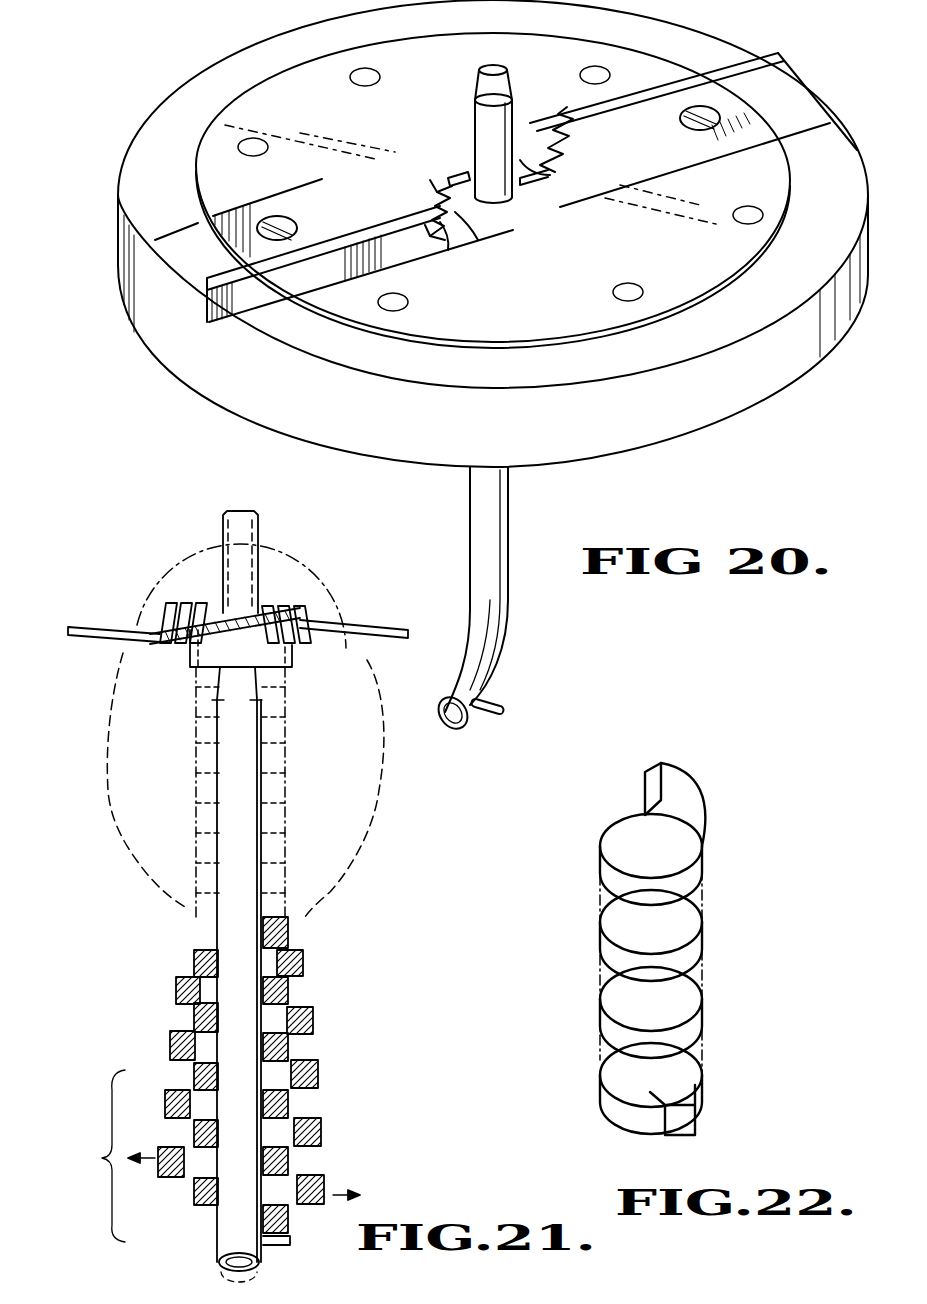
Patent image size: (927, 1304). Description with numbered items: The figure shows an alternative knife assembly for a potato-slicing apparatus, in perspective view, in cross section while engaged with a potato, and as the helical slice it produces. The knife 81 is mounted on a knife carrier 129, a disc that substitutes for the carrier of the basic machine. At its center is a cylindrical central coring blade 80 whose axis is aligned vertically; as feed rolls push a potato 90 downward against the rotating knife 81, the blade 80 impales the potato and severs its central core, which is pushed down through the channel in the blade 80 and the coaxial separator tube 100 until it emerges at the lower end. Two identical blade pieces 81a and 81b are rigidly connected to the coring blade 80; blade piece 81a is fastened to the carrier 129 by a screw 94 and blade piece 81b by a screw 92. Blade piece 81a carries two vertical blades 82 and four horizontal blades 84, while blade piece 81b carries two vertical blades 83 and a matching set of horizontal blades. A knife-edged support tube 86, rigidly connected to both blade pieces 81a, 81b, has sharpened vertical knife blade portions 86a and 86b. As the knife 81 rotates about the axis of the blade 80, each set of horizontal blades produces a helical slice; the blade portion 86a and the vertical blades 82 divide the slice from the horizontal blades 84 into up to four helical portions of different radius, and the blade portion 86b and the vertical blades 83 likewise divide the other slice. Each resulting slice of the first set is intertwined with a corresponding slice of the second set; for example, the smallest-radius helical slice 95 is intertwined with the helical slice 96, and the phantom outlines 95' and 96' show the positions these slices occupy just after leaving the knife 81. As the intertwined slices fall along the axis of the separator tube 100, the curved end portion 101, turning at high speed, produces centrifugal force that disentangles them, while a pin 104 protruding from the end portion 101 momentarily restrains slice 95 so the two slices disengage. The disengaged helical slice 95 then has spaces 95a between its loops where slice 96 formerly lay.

In FIG. 20, the knife 81 is at (258, 84).
In FIG. 21, the knife 81 is at (212, 551).
In FIG. 20, the blade piece 81a is at (597, 55).
In FIG. 20, the blade piece 81b is at (690, 262).
In FIG. 20, the central coring blade 80 is at (481, 90).
In FIG. 21, the central coring blade 80 is at (226, 517).
In FIG. 20, the vertical blades 82 is at (455, 215).
In FIG. 21, the vertical blades 82 is at (292, 617).
In FIG. 20, the vertical blades 83 is at (548, 135).
In FIG. 21, the vertical blades 83 is at (165, 612).
In FIG. 20, the horizontal blades 84 is at (447, 178).
In FIG. 21, the knife-edged support tube 86 is at (293, 662).
In FIG. 20, the knife blade portion 86a is at (490, 215).
In FIG. 20, the knife blade portion 86b is at (520, 160).
In FIG. 21, the potato 90 is at (304, 561).
In FIG. 20, the screw 92 is at (698, 128).
In FIG. 20, the screw 94 is at (292, 222).
In FIG. 21, the helical slice 95 is at (264, 1075).
In FIG. 22, the helical slice 95 is at (673, 941).
In FIG. 21, the helical slice (phantom) 95' is at (164, 786).
In FIG. 22, the spaces 95a is at (592, 877).
In FIG. 21, the helical slice 96 is at (324, 1077).
In FIG. 21, the helical slice (phantom) 96' is at (323, 790).
In FIG. 20, the separator tube 100 is at (520, 511).
In FIG. 21, the separator tube 100 is at (206, 932).
In FIG. 20, the curved end portion 101 is at (498, 694).
In FIG. 21, the curved end portion 101 is at (216, 1156).
In FIG. 20, the pin 104 is at (497, 712).
In FIG. 21, the pin 104 is at (287, 1243).
In FIG. 20, the knife carrier 129 is at (178, 362).